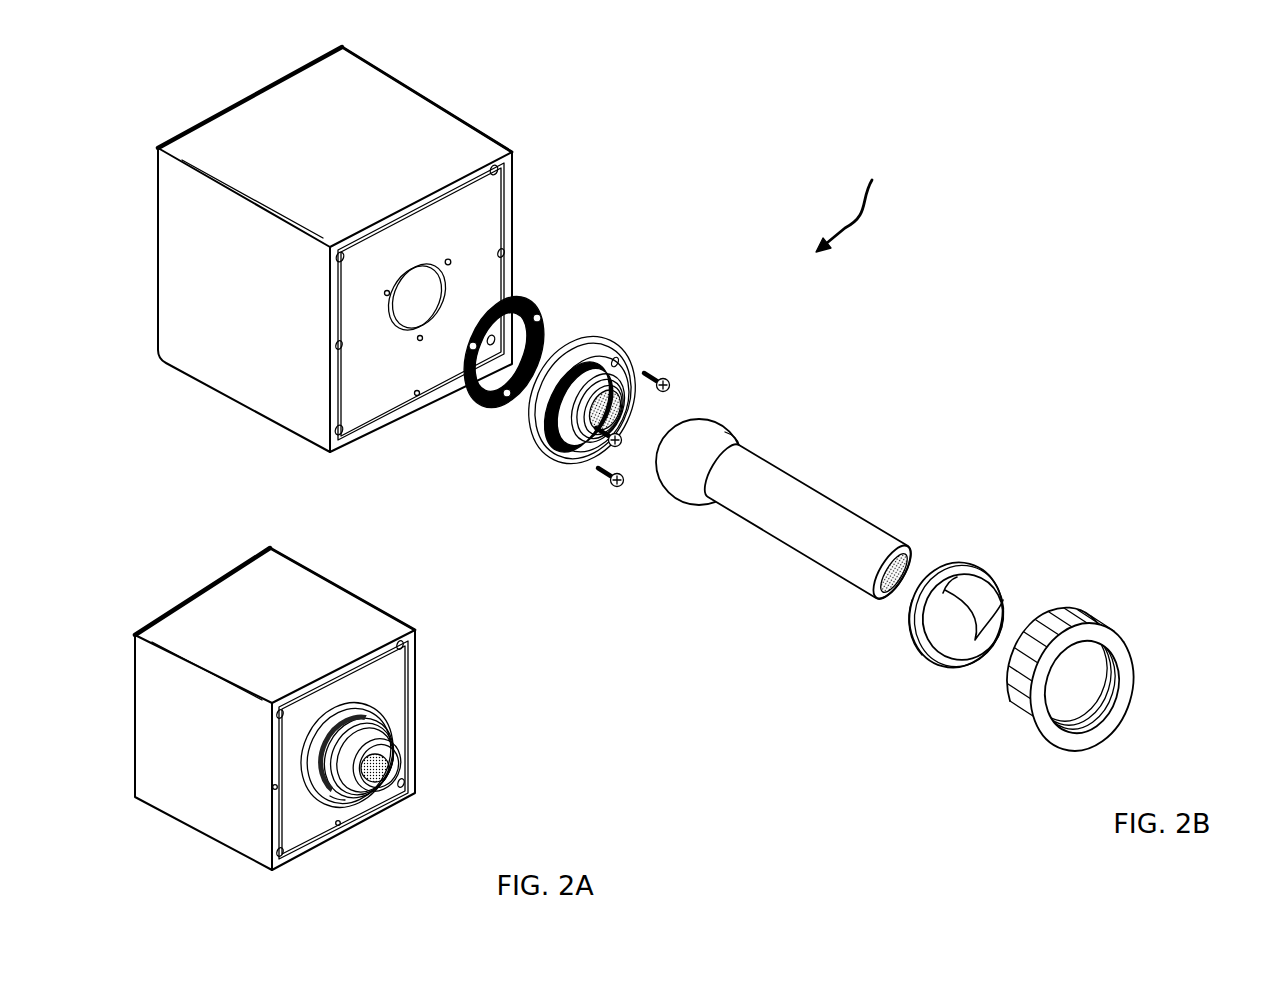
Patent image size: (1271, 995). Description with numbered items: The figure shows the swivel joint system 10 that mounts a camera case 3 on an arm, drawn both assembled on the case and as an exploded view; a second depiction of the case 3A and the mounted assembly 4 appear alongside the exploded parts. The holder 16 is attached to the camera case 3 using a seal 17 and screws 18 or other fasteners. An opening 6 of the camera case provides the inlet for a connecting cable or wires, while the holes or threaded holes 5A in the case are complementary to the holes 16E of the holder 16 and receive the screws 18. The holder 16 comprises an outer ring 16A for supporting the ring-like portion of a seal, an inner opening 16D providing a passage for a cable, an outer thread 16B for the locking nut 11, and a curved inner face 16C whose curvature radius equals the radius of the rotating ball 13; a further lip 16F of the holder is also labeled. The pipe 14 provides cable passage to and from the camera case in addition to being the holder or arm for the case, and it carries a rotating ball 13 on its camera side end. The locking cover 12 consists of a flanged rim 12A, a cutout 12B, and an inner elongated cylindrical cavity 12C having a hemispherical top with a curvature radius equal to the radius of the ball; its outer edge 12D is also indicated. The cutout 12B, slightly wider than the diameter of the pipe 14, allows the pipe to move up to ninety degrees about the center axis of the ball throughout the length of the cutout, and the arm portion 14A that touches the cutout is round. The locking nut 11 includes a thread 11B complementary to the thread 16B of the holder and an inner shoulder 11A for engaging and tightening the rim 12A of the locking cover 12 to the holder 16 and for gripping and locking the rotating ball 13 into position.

In FIG. 2A, the camera case 3 is at (292, 562).
In FIG. 2A, the electrical box (exploded view) 3A is at (440, 118).
In FIG. 2A, the mounting assembly 4 is at (317, 811).
In FIG. 2A, the threaded holes 5A is at (450, 258).
In FIG. 2A, the opening 6 is at (409, 313).
In FIG. 2B, the swivel joint system 10 is at (859, 200).
In FIG. 2B, the locking nut 11 is at (1099, 648).
In FIG. 2B, the inner shoulder 11A is at (1116, 670).
In FIG. 2B, the thread 11B is at (1068, 723).
In FIG. 2B, the locking cover 12 is at (965, 612).
In FIG. 2B, the flanged rim 12A is at (965, 568).
In FIG. 2B, the cutout 12B is at (995, 612).
In FIG. 2B, the ring socket cavity 12C is at (1000, 620).
In FIG. 2B, the ring outer edge 12D is at (907, 632).
In FIG. 2B, the rotating ball 13 is at (668, 485).
In FIG. 2B, the pipe 14 is at (811, 501).
In FIG. 2B, the arm portion 14A is at (742, 438).
In FIG. 2A, the holder 16 is at (557, 357).
In FIG. 2A, the outer ring 16A is at (535, 445).
In FIG. 2A, the outer thread 16B is at (562, 440).
In FIG. 2A, the curved inner face 16C is at (628, 425).
In FIG. 2A, the inner opening 16D is at (612, 402).
In FIG. 2A, the holes 16E is at (555, 422).
In FIG. 2A, the flange lip 16F is at (330, 800).
In FIG. 2A, the seal 17 is at (528, 300).
In FIG. 2A, the screws 18 is at (669, 382).